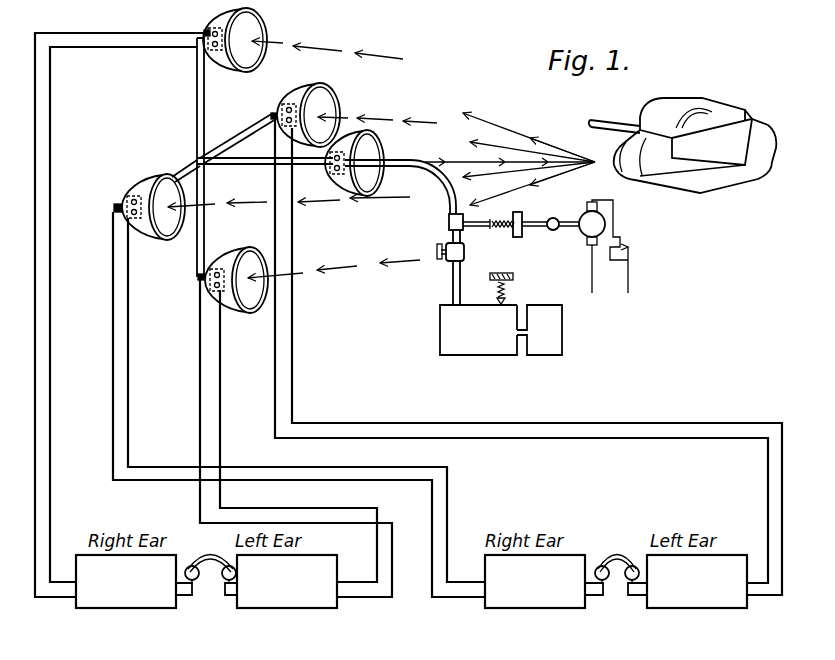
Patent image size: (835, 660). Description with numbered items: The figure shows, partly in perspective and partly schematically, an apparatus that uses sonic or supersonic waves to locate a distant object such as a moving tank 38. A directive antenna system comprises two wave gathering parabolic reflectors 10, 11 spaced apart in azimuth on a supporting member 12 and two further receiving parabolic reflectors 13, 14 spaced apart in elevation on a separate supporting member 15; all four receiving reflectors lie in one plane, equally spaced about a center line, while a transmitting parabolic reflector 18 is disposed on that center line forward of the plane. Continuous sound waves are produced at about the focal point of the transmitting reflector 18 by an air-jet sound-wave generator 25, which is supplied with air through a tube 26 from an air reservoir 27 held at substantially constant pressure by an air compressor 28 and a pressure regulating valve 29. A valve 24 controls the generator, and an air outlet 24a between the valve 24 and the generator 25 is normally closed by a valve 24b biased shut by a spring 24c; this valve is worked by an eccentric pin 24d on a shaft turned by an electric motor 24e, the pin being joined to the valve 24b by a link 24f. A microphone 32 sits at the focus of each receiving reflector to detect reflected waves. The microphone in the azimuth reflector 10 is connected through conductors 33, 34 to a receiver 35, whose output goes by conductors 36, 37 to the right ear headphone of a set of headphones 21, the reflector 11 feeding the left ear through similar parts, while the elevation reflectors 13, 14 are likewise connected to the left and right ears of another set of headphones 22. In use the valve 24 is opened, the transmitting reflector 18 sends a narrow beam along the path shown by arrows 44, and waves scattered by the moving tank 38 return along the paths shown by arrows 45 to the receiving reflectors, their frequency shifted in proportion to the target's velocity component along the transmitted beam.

The parabolic reflector 10 is at (168, 243).
The parabolic reflector 11 is at (341, 108).
The supporting member 12 is at (197, 162).
The parabolic reflector 13 is at (247, 313).
The parabolic reflector 14 is at (268, 29).
The supporting member 15 is at (197, 93).
The transmitting parabolic reflector 18 is at (386, 152).
The set of headphones 21 is at (623, 556).
The set of headphones 22 is at (226, 556).
The valve 24 is at (449, 258).
The air outlet 24a is at (488, 228).
The valve 24b is at (503, 230).
The spring 24c is at (513, 222).
The eccentric pin 24d is at (557, 220).
The electric motor 24e is at (606, 219).
The link 24f is at (544, 227).
The air-jet sound-wave generator 25 is at (332, 177).
The tube 26 is at (448, 242).
The air reservoir 27 is at (467, 355).
The air compressor 28 is at (540, 355).
The pressure regulating valve 29 is at (507, 299).
The microphone 32 is at (208, 28).
The conductor 33 is at (113, 409).
The conductor 34 is at (128, 410).
The receiver 35 is at (148, 600).
The conductor 36 is at (192, 583).
The conductor 37 is at (183, 596).
The moving tank 38 is at (678, 189).
The arrows 44 is at (427, 163).
The arrows 45 is at (378, 56).